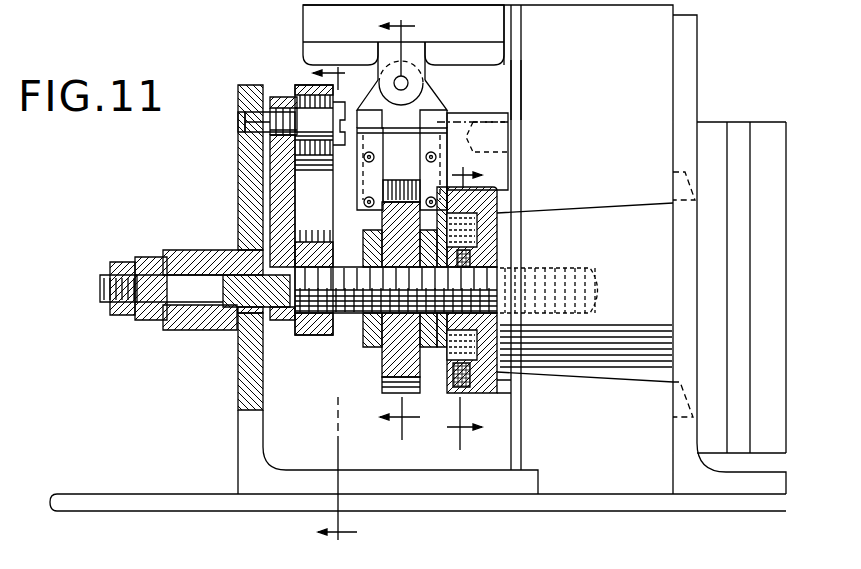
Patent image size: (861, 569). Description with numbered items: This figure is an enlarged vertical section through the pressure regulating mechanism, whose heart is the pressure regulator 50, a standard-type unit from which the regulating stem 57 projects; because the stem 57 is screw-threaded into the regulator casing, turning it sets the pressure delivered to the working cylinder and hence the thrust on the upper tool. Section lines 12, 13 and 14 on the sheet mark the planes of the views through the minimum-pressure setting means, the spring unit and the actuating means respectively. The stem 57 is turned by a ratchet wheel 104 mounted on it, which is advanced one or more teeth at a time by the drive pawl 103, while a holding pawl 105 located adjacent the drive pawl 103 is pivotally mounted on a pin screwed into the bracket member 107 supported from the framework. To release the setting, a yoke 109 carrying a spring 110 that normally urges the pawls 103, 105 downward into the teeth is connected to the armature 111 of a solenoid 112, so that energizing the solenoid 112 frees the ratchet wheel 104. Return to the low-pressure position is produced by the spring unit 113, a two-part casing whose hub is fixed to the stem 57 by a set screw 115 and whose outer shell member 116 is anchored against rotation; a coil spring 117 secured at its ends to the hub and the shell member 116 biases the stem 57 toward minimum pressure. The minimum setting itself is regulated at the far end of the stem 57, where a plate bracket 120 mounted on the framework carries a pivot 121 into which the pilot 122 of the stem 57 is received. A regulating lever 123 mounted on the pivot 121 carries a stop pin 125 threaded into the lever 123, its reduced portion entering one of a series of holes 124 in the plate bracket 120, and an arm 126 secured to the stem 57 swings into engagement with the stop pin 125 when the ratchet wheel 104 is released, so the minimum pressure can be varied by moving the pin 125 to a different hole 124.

The section line 12- 12 is at (350, 306).
The section line 13- 13 is at (462, 302).
The section line 14- 14 is at (412, 230).
The pressure regulator 50 is at (586, 212).
The regulating stem 57 is at (343, 317).
The drive pawl 103 is at (390, 170).
The ratchet wheel 104 is at (384, 370).
The holding pawl 105 is at (358, 190).
The bracket member 107 is at (514, 102).
The yoke 109 is at (387, 207).
The spring 110 is at (441, 106).
The armature 111 is at (416, 78).
The solenoid 112 is at (303, 27).
The spring unit 113 is at (507, 387).
The set screw 115 is at (497, 248).
The outer shell member 116 is at (487, 188).
The coil spring 117 is at (500, 197).
The plate bracket 120 is at (240, 187).
The pivot 121 is at (160, 318).
The pilot 122 is at (284, 320).
The regulating lever 123 is at (278, 97).
The holes 124 is at (243, 137).
The stop pin 125 is at (241, 125).
The arm 126 is at (318, 337).